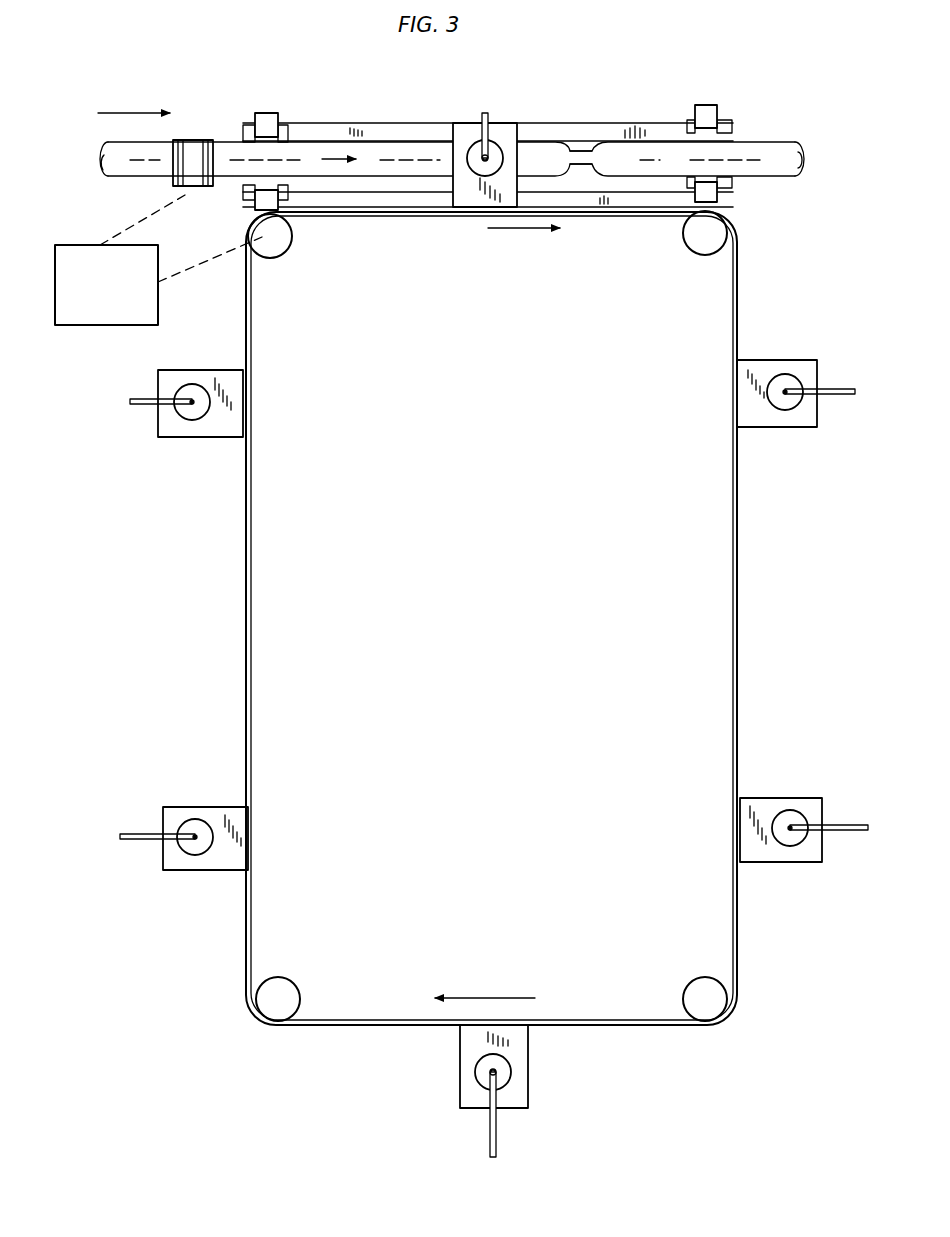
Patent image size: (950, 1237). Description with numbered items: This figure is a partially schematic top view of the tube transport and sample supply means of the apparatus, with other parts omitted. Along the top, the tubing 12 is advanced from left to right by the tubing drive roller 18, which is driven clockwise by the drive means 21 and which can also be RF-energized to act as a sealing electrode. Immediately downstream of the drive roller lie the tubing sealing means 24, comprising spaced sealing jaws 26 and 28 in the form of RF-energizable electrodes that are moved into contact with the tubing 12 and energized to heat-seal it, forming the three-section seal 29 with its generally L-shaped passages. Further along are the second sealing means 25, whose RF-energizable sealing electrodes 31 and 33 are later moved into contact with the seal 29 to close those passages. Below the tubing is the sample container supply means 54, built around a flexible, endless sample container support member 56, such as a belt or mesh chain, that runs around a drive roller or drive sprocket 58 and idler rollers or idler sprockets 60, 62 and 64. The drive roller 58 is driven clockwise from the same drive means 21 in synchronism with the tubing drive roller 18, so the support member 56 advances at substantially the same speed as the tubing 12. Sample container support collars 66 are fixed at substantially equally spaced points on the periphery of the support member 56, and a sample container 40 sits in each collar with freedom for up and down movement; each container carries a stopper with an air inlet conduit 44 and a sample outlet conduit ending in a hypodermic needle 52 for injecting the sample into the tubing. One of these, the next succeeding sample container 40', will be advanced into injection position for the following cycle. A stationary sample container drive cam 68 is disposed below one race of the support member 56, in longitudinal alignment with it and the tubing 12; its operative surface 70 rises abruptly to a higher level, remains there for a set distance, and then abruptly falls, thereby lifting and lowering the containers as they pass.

The tubing 12 is at (108, 150).
The tubing drive roller 18 is at (195, 150).
The drive means 21 is at (60, 330).
The tubing sealing means 24 is at (266, 109).
The tubing sealing means 25 is at (740, 109).
The sealing jaw 26 is at (276, 118).
The sealing jaw 28 is at (254, 207).
The three-section seal 29 is at (578, 162).
The sealing electrode 31 is at (698, 110).
The sealing electrode 33 is at (718, 197).
The sample container 40 is at (494, 600).
The next succeeding sample container 40' is at (186, 425).
The air inlet conduit 44 is at (490, 118).
The hypodermic needle 52 is at (485, 161).
The sample container supply means 54 is at (787, 880).
The sample container support member 56 is at (738, 530).
The drive roller or drive sprocket 58 is at (272, 256).
The idler roller or idler sprocket 60 is at (696, 240).
The idler roller or idler sprocket 62 is at (697, 982).
The idler roller or idler sprocket 64 is at (310, 967).
The sample container support collar 66 is at (530, 140).
The sample container drive cam 68 is at (605, 122).
The operative surface 70 is at (408, 110).